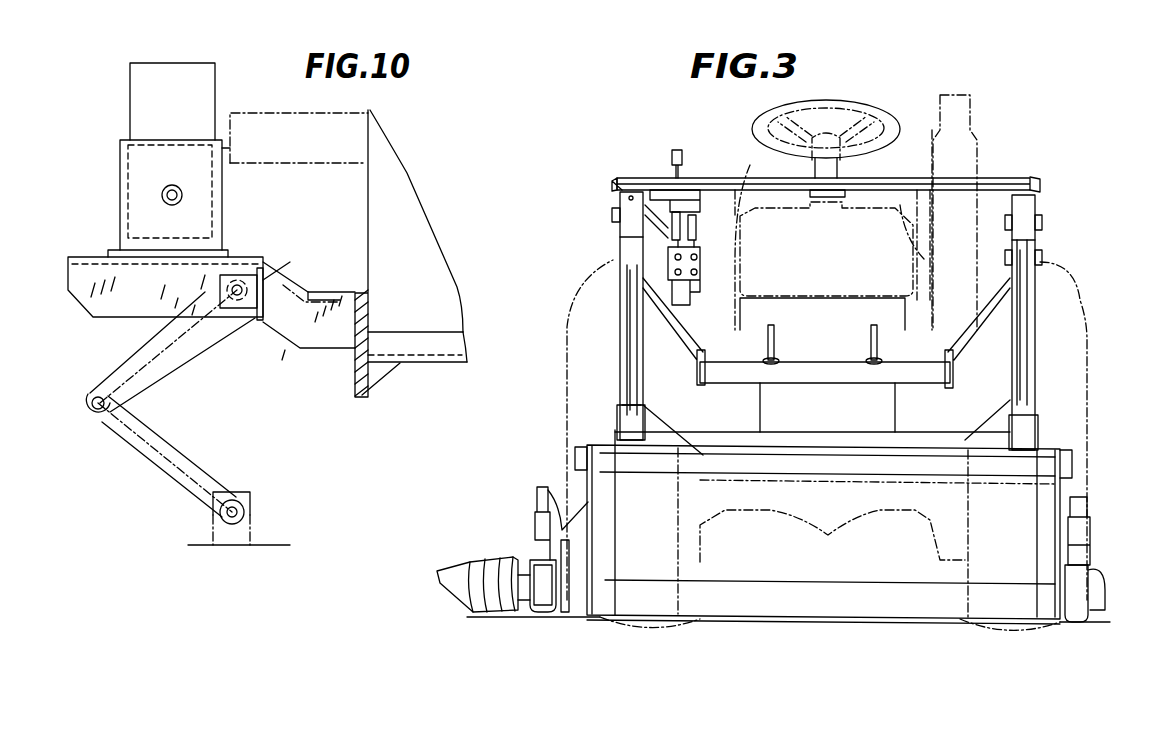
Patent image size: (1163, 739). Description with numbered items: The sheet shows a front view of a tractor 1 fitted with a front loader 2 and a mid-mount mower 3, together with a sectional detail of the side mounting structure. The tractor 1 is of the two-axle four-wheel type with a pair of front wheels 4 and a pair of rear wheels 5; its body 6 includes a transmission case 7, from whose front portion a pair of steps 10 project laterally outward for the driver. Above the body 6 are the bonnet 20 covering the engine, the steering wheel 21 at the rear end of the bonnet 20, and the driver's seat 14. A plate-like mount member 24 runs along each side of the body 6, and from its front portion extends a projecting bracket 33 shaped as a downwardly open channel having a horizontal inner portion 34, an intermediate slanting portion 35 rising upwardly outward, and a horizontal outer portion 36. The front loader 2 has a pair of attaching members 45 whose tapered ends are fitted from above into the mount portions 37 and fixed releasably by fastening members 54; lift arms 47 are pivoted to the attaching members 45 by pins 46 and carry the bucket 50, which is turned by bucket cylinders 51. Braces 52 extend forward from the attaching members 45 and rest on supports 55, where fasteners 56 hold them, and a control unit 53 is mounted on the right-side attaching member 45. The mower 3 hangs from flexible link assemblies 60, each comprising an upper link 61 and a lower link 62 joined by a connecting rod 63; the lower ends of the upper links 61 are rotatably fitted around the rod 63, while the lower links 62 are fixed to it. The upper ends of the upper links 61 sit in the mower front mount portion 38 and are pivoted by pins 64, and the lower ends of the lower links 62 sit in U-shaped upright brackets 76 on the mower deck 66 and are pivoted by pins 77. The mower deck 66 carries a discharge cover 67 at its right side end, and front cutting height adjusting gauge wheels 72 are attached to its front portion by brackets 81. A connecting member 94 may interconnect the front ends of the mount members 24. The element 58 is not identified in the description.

In FIG. 3, the tractor 1 is at (745, 160).
In FIG. 3, the front loader 2 is at (1050, 237).
In FIG. 3, the mower 3 is at (1108, 570).
In FIG. 3, the front wheels 4 is at (652, 632).
In FIG. 3, the rear wheels 5 is at (565, 394).
In FIG. 10, the tractor body 6 is at (440, 237).
In FIG. 10, the transmission case 7 is at (368, 150).
In FIG. 10, the steps 10 is at (317, 115).
In FIG. 3, the driver's seat 14 is at (916, 150).
In FIG. 3, the bonnet 20 is at (878, 198).
In FIG. 3, the steering wheel 21 is at (850, 103).
In FIG. 10, the mount member 24 is at (355, 370).
In FIG. 10, the projecting bracket 33 is at (285, 345).
In FIG. 10, the horizontal inner portion 34 is at (340, 305).
In FIG. 10, the intermediate slanting portion 35 is at (310, 290).
In FIG. 10, the horizontal outer portion 36 is at (88, 292).
In FIG. 10, the mount portion 37 is at (230, 140).
In FIG. 10, the mower front mount portion 38 is at (238, 275).
In FIG. 10, the attaching member 45 is at (215, 78).
In FIG. 3, the attaching member 45 is at (618, 303).
In FIG. 3, the pin 46 is at (622, 205).
In FIG. 3, the lift arm 47 is at (612, 217).
In FIG. 3, the bucket 50 is at (1050, 495).
In FIG. 3, the bucket cylinder 51 is at (628, 327).
In FIG. 3, the brace 52 is at (686, 302).
In FIG. 3, the control unit 53 is at (693, 217).
In FIG. 10, the fastening member 54 is at (167, 186).
In FIG. 3, the support 55 is at (823, 372).
In FIG. 3, the fastener 56 is at (774, 335).
In FIG. 3, the control lever 58 is at (672, 152).
In FIG. 10, the flexible link assembly 60 is at (110, 440).
In FIG. 10, the upper link 61 is at (185, 350).
In FIG. 10, the lower link 62 is at (150, 468).
In FIG. 10, the connecting rod 63 is at (93, 400).
In FIG. 10, the pin 64 is at (275, 268).
In FIG. 10, the mower deck 66 is at (272, 542).
In FIG. 3, the mower deck 66 is at (575, 592).
In FIG. 3, the discharge cover 67 is at (493, 605).
In FIG. 3, the front cutting height adjusting gauge wheel 72 is at (545, 600).
In FIG. 10, the U-shaped upright bracket 76 is at (255, 512).
In FIG. 10, the pin 77 is at (243, 498).
In FIG. 3, the bracket 81 is at (573, 562).
In FIG. 10, the connecting member 94 is at (438, 366).